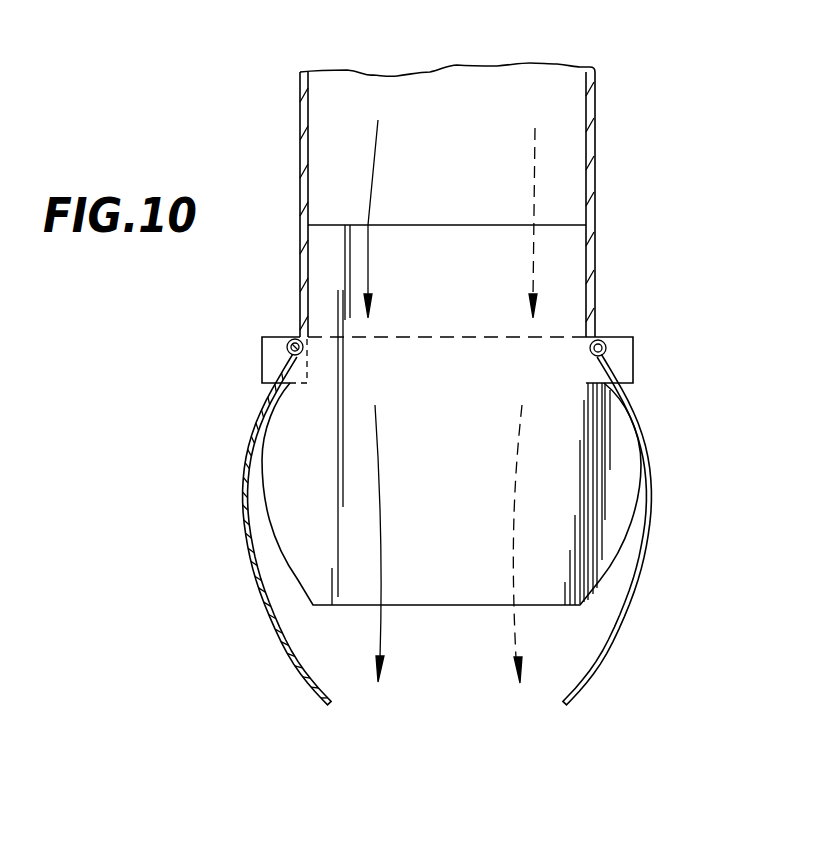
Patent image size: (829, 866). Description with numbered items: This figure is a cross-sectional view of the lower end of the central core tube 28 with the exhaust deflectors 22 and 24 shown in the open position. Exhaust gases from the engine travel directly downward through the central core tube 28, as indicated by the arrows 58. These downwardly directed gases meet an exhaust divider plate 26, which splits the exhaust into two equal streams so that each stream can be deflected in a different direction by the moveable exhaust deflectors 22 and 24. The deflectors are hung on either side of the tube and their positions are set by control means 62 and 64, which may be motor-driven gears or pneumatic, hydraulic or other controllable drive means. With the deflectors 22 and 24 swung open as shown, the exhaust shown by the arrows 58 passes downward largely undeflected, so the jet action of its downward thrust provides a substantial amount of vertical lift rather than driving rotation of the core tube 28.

The central core tube 28 is at (583, 64).
The arrows 58 is at (535, 175).
The control means 62 is at (275, 337).
The control means 64 is at (632, 337).
The exhaust deflector 22 is at (270, 633).
The exhaust deflector 24 is at (623, 627).
The exhaust divider plate 26 is at (432, 605).